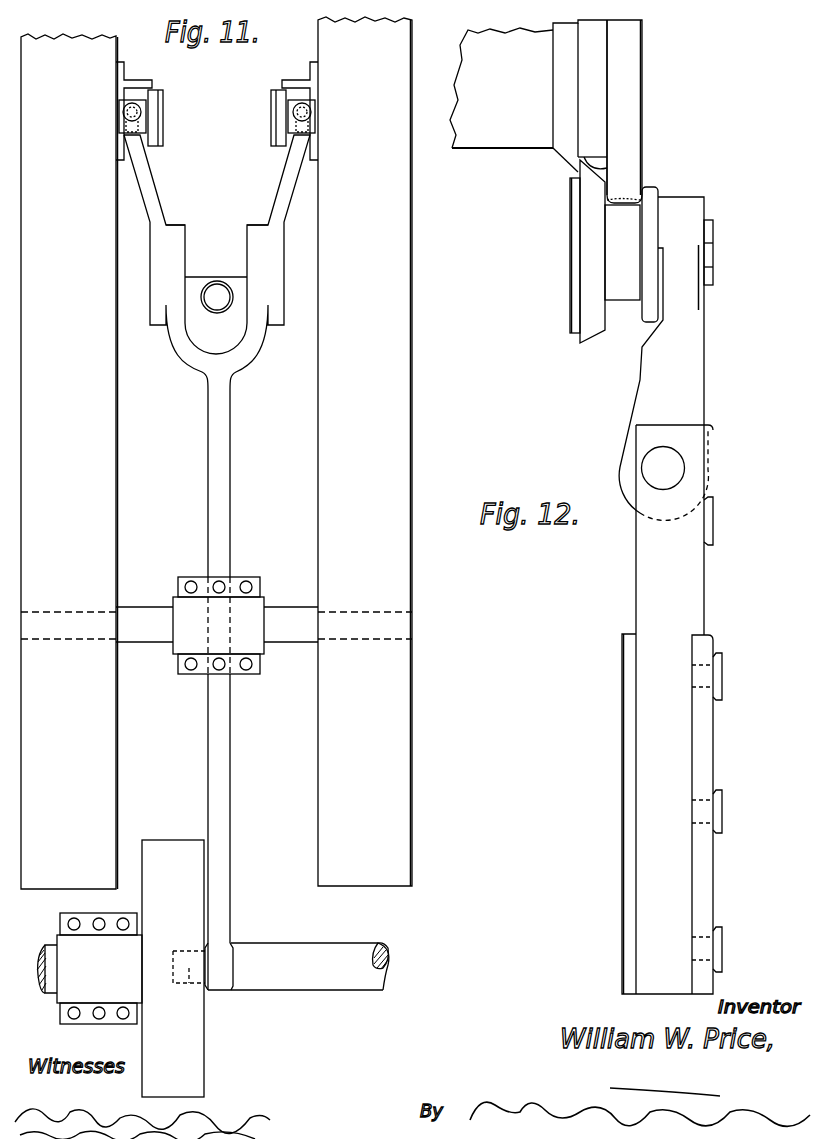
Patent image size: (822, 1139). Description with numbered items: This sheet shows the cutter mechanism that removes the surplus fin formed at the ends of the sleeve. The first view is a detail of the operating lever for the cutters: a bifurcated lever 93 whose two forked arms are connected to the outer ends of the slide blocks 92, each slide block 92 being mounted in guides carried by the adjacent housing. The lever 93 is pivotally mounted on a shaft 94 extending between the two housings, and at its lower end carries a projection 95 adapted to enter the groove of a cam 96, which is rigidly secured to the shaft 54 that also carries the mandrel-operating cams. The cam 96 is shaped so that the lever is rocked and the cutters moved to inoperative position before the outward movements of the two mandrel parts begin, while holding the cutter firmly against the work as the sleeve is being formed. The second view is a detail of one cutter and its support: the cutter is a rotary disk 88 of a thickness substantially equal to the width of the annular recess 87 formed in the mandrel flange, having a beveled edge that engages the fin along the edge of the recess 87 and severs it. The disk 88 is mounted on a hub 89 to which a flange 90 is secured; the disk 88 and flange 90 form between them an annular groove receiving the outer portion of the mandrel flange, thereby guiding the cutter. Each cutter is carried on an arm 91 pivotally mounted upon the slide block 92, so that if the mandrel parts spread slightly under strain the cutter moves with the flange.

In FIG. 11, the shaft 54 is at (373, 968).
In FIG. 12, the annular recess 87 is at (607, 172).
In FIG. 11, the disk 88 is at (277, 118).
In FIG. 12, the disk 88 is at (590, 225).
In FIG. 12, the hub 89 is at (622, 285).
In FIG. 12, the flange 90 is at (650, 188).
In FIG. 12, the arm 91 is at (685, 325).
In FIG. 11, the slide block 92 is at (137, 97).
In FIG. 12, the slide block 92 is at (650, 550).
In FIG. 11, the bifurcated lever 93 is at (231, 482).
In FIG. 11, the shaft 94 is at (298, 637).
In FIG. 11, the projection 95 is at (190, 984).
In FIG. 11, the cam 96 is at (183, 1045).